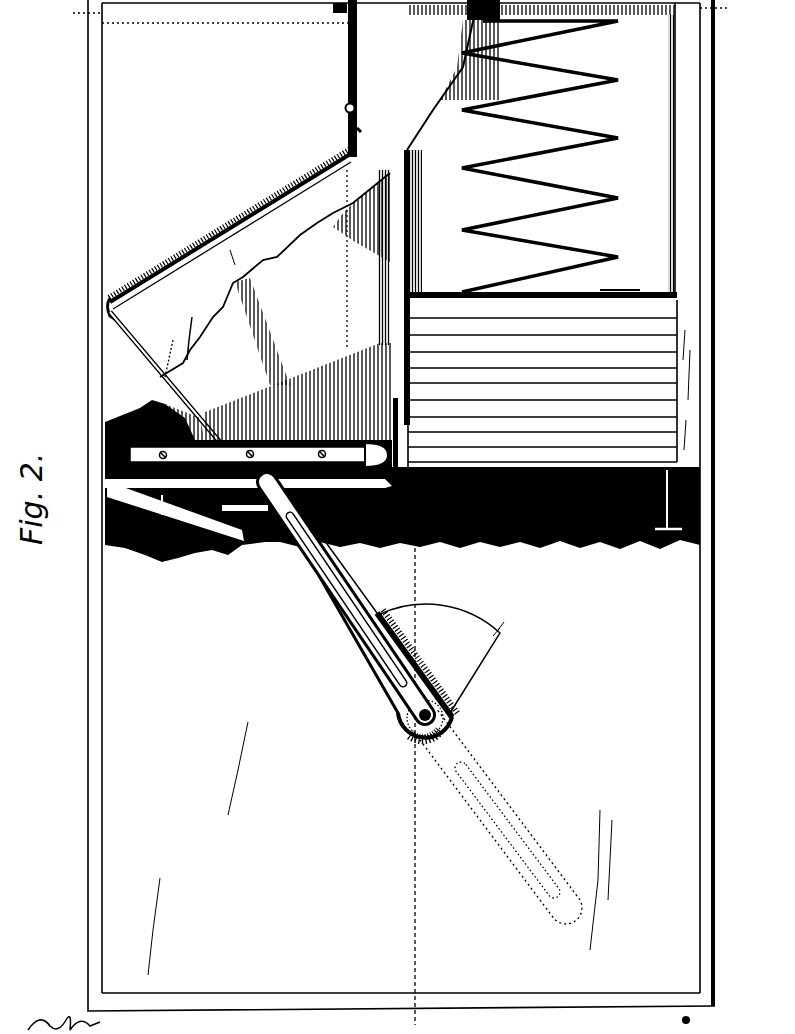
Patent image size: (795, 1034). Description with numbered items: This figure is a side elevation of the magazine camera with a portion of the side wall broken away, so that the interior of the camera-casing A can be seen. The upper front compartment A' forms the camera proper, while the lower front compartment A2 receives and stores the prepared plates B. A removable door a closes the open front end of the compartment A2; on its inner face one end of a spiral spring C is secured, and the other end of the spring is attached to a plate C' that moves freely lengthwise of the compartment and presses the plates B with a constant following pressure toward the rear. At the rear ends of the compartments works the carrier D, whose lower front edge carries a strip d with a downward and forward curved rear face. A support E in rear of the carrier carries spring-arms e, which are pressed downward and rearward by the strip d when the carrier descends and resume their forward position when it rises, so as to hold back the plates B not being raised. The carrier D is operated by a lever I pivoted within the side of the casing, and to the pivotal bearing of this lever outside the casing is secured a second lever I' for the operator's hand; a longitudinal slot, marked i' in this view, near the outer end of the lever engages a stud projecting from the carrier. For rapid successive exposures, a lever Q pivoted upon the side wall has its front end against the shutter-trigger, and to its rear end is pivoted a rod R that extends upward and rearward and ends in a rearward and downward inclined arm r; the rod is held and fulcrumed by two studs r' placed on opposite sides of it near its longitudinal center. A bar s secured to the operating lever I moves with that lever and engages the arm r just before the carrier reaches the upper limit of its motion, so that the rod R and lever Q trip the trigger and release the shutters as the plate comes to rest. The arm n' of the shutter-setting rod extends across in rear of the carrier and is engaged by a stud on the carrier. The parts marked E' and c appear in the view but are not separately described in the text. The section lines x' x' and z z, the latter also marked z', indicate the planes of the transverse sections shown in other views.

The camera-casing A is at (407, 512).
The upper front compartment A' is at (266, 306).
The lower front compartment A2 is at (540, 150).
The prepared plates B is at (88, 462).
The spiral spring C is at (540, 156).
The plate C' is at (620, 277).
The carrier D is at (110, 490).
The strip d is at (413, 468).
The support E is at (402, 490).
The plate with screws E' is at (259, 432).
The lever I is at (446, 730).
The second lever I' is at (349, 601).
The slot in inner arm i' is at (299, 540).
The lever Q is at (350, 90).
The rod R is at (290, 192).
The arm r is at (91, 308).
The studs r' is at (243, 217).
The bar s is at (140, 382).
The removable door a is at (232, 572).
The tray bottom c is at (603, 473).
The spring-arms e is at (667, 467).
The lateral arm n' is at (441, 635).
The section line x' x' is at (400, 495).
The section line z z is at (233, 523).
The section line z' is at (722, 15).